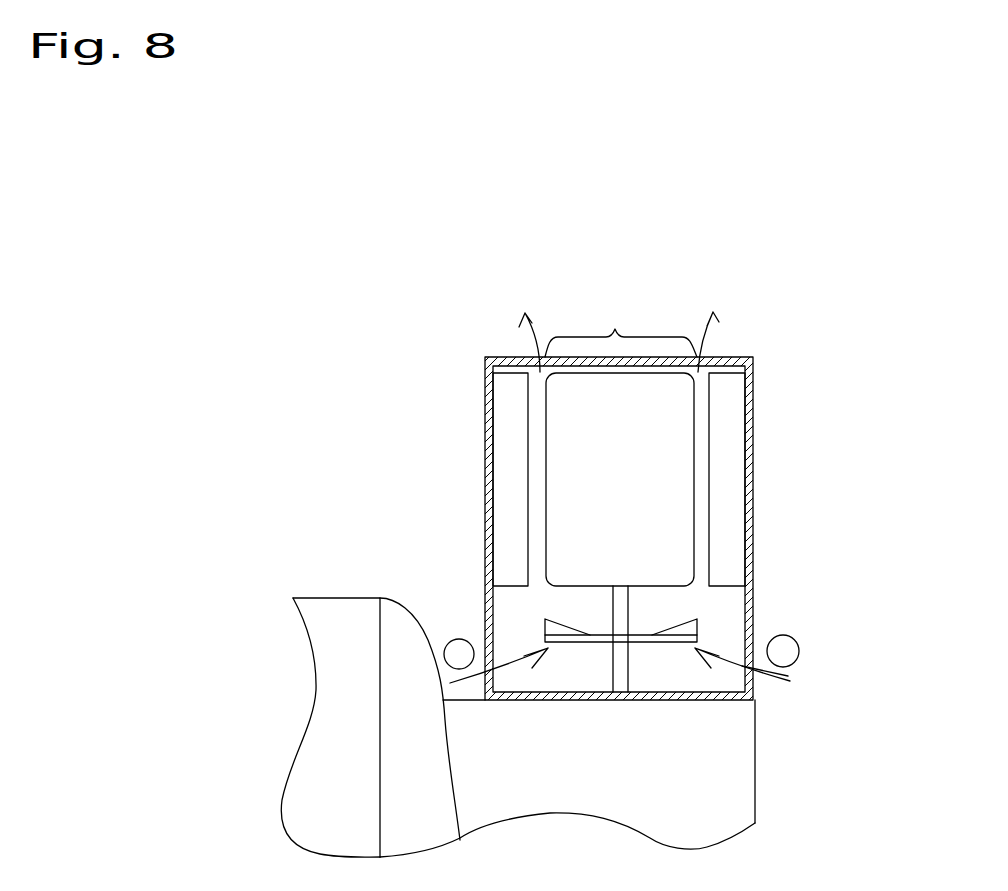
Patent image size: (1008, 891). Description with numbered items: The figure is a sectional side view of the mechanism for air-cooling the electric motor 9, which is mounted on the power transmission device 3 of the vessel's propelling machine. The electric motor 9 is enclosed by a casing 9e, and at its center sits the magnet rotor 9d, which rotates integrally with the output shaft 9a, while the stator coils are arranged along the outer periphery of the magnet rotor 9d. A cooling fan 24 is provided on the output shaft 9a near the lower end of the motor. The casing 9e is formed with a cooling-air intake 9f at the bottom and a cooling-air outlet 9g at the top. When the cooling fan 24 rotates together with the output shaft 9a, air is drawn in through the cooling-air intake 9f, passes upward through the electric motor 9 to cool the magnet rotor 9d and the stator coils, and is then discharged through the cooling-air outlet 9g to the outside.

The power transmission device 3 is at (770, 797).
The electric motor 9 is at (570, 528).
The output shaft 9a is at (613, 609).
The magnet rotor 9d is at (620, 479).
The casing 9e is at (480, 559).
The cooling-air intake 9f is at (762, 683).
The cooling-air outlet 9g is at (619, 332).
The cooling fan 24 is at (692, 629).